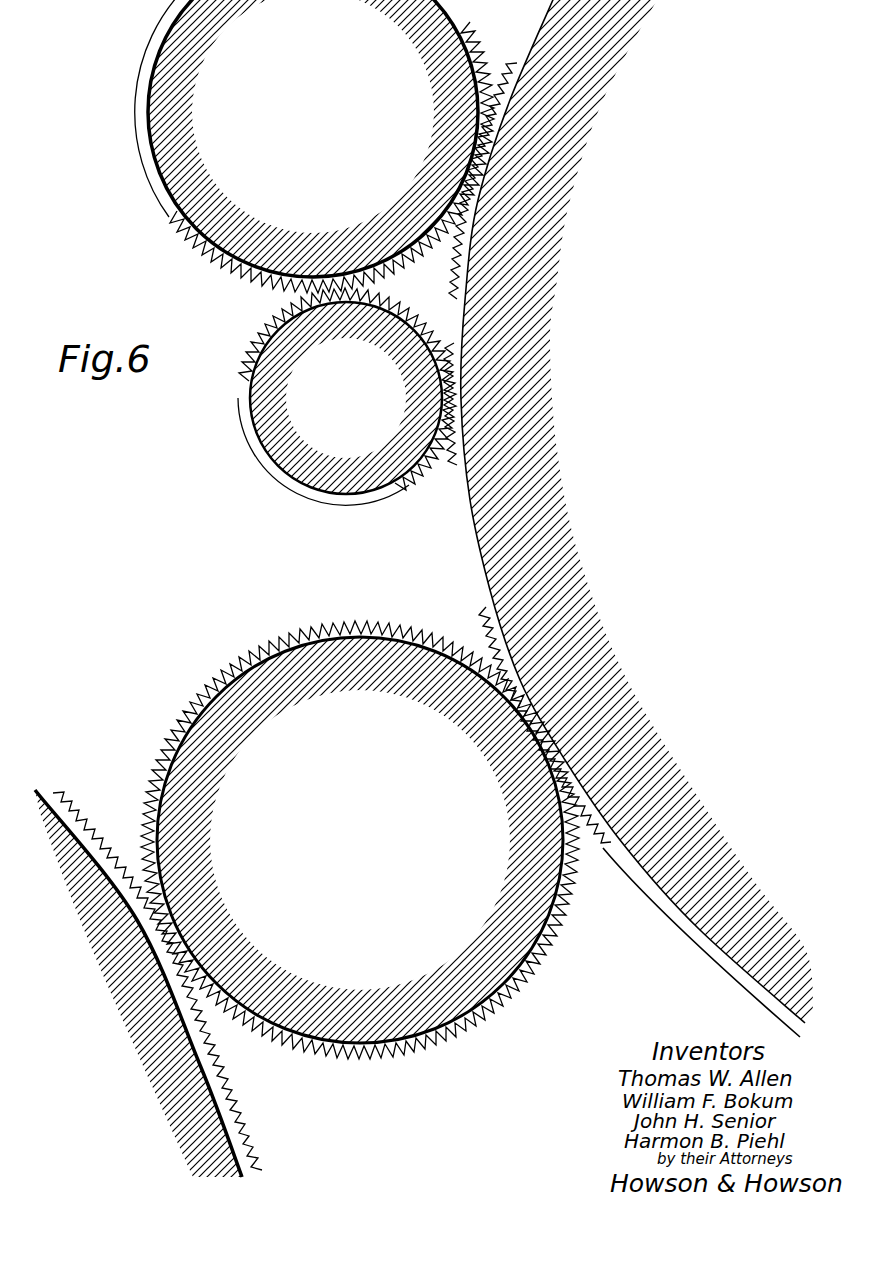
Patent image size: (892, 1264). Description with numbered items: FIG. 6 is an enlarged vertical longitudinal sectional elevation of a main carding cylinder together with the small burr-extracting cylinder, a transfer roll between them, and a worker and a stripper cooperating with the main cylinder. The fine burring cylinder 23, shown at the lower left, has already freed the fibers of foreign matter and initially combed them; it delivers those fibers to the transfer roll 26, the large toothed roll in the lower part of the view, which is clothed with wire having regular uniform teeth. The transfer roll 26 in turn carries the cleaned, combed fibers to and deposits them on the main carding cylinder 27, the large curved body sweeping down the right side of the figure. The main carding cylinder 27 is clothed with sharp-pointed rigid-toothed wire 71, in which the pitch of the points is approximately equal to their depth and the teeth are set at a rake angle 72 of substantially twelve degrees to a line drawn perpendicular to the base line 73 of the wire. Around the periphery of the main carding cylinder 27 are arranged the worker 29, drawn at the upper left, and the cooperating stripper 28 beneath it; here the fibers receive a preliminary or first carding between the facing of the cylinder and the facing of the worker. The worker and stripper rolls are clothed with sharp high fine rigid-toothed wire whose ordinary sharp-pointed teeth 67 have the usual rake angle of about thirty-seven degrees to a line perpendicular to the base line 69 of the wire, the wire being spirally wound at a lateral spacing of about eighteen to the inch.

The fine burring cylinder 23 is at (195, 1105).
The transfer roll 26 is at (375, 840).
The main carding cylinder 27 is at (700, 952).
The stripper 28 is at (348, 481).
The worker 29 is at (232, 236).
The teeth 67 is at (255, 283).
The base line 69 is at (521, 970).
The sharp-pointed rigid-toothed wire 71 is at (616, 518).
The rake angle 72 is at (465, 283).
The base line 73 is at (472, 312).